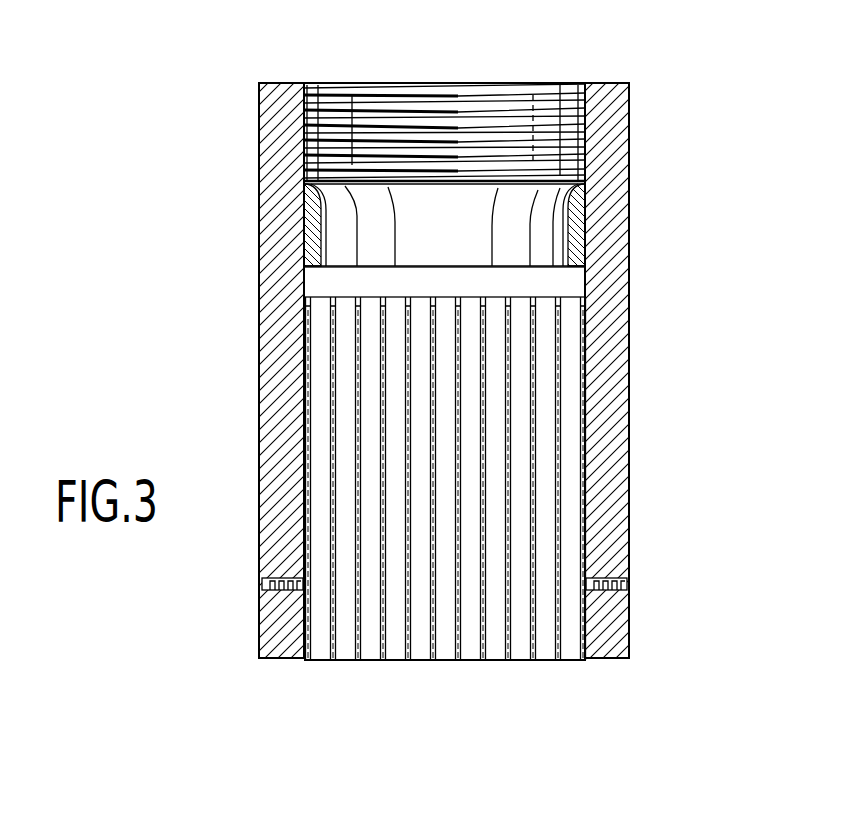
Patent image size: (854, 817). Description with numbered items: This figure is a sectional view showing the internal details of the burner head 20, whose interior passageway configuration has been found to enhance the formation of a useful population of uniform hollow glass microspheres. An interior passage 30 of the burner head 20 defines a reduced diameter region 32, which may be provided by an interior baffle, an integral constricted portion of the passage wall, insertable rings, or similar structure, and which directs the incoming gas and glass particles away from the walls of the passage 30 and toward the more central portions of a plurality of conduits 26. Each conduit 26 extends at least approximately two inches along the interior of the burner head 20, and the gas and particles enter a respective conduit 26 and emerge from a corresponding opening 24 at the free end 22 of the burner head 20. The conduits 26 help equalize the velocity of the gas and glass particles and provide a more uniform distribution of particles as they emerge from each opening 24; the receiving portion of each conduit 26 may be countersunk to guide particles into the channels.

The burner head 20 is at (259, 318).
The free end 22 is at (596, 668).
The opening 24 is at (518, 300).
The conduit 26 is at (370, 452).
The interior passage 30 is at (490, 122).
The reduced diameter region 32 is at (322, 229).